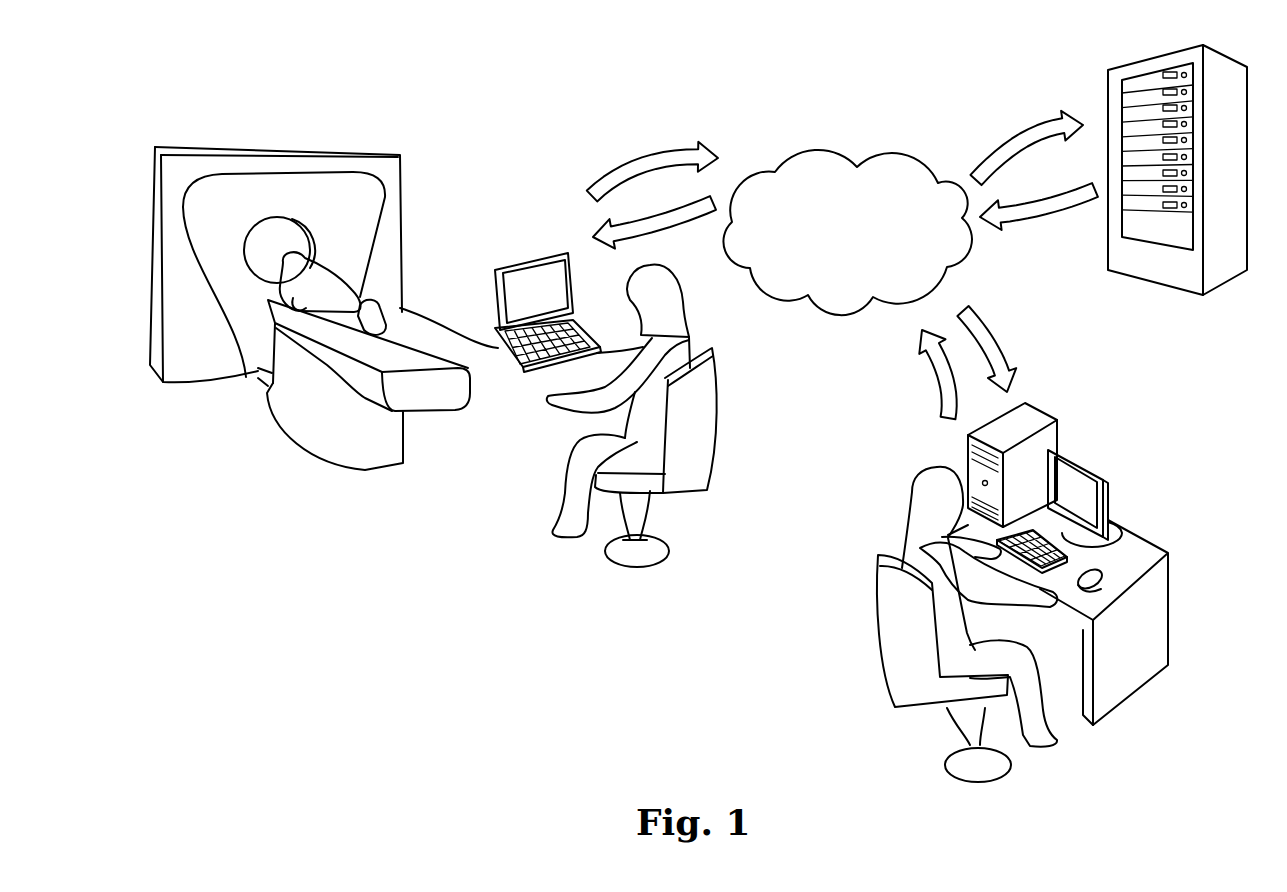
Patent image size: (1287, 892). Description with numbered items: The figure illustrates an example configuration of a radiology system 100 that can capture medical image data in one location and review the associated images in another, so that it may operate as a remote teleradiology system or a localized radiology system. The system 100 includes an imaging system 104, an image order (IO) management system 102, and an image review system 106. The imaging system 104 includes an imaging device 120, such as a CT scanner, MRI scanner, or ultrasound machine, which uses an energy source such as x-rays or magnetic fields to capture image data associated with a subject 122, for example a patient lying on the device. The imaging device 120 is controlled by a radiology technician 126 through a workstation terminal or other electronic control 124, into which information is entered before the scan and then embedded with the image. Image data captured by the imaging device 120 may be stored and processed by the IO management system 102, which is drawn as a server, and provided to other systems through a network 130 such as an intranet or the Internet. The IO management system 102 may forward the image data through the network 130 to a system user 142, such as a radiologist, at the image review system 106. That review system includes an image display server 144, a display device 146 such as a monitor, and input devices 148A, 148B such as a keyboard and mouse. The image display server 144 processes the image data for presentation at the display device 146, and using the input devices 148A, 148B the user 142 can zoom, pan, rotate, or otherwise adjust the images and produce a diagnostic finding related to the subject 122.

The radiology system 100 is at (350, 707).
The image order (IO) management system 102 is at (1120, 64).
The imaging system 104 is at (495, 565).
The image review system 106 is at (1145, 408).
The imaging device 120 is at (372, 146).
The subject 122 is at (325, 264).
The workstation terminal 124 is at (503, 265).
The radiology technician 126 is at (693, 338).
The network 130 is at (827, 151).
The system user 142 is at (917, 484).
The image display server 144 is at (1057, 420).
The display device 146 is at (1110, 471).
The input device 148A is at (1153, 548).
The input device 148B is at (1102, 577).